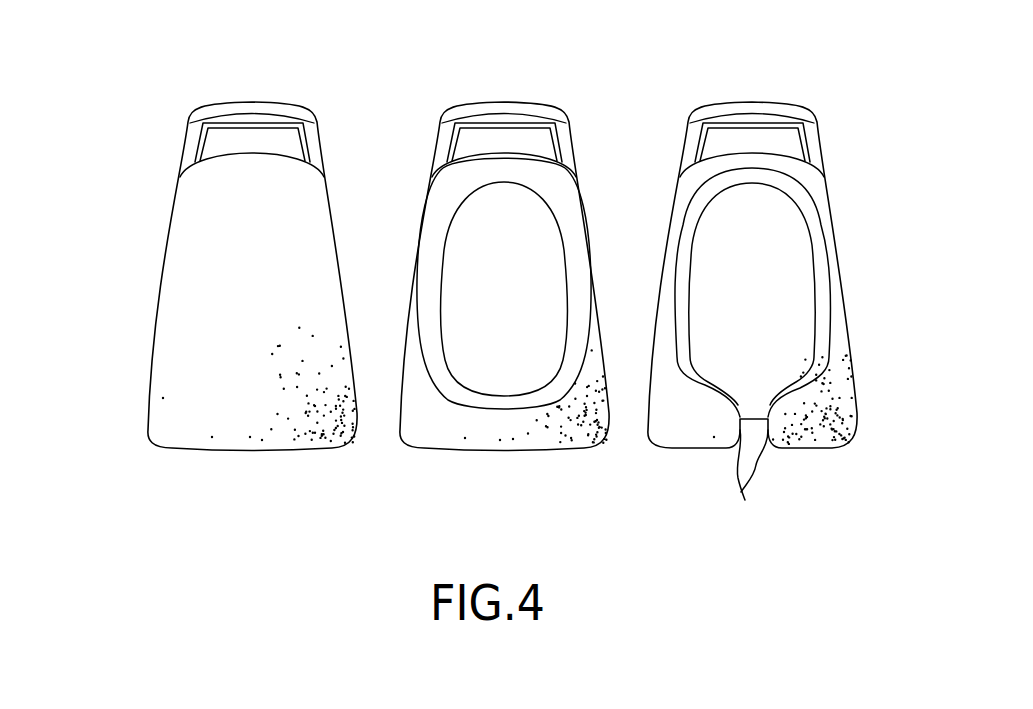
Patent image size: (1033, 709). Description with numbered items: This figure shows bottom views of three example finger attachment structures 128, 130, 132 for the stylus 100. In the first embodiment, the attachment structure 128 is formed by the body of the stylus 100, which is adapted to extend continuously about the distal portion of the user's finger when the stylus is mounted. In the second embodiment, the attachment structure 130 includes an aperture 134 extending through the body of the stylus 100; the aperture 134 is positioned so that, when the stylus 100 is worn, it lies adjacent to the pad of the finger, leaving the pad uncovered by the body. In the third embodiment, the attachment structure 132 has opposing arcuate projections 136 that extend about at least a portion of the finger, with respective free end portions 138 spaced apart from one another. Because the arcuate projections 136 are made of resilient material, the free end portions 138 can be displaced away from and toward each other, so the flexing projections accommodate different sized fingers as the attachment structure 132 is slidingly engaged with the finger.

The stylus 100 is at (492, 290).
The attachment structure 128 is at (227, 282).
The attachment structure 130 is at (487, 315).
The attachment structure 132 is at (738, 314).
The aperture 134 is at (437, 248).
The opposing arcuate projections 136 is at (700, 410).
The free end portions 138 is at (741, 492).